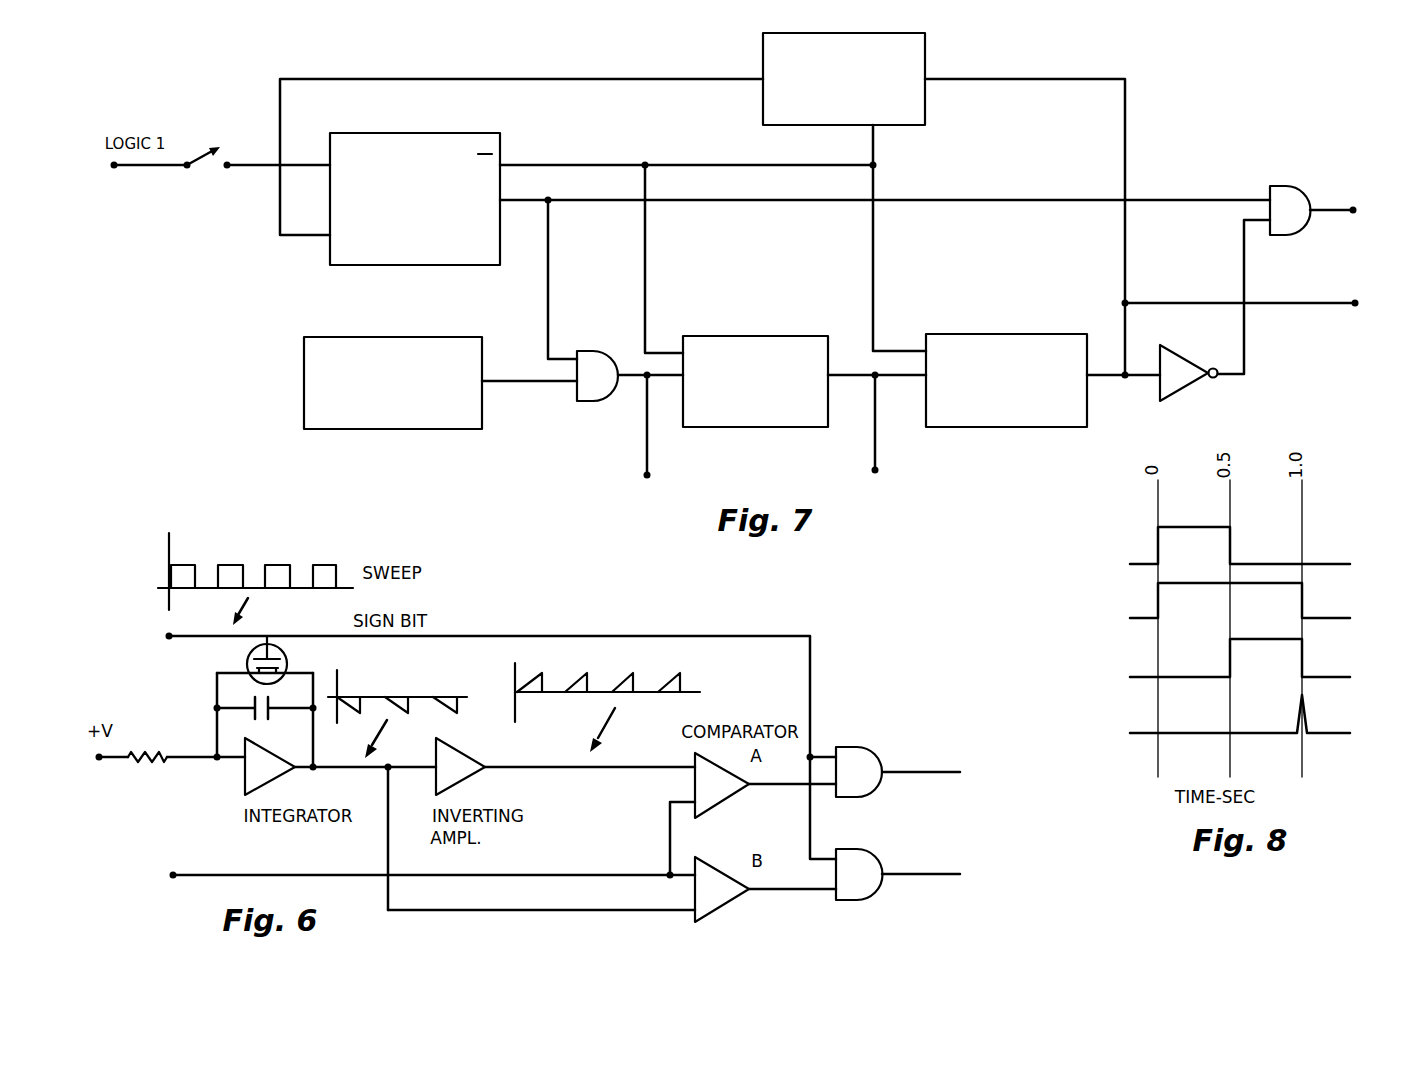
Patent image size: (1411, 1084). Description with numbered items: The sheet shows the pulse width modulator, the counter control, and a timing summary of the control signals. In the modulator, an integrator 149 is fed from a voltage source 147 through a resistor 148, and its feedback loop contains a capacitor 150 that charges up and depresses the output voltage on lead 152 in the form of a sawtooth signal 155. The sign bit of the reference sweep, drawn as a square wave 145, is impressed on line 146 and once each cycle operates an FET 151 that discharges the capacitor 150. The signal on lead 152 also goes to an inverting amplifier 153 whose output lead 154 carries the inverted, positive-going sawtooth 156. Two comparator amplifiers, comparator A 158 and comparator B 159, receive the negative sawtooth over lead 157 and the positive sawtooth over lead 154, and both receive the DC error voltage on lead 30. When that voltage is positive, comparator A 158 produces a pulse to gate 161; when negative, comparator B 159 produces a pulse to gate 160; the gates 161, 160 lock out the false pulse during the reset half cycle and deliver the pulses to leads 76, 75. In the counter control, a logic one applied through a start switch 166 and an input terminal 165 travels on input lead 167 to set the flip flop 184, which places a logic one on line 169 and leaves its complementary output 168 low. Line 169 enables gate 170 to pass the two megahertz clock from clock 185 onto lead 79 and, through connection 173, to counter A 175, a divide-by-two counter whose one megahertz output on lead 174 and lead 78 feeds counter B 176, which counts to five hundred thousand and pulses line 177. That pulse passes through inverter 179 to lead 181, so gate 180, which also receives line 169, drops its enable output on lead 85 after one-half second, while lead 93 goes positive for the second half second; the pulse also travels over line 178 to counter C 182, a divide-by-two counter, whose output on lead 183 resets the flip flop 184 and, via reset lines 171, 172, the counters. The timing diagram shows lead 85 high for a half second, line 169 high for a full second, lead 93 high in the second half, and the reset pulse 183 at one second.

In FIG. 7, the logic 1 input terminal 165 is at (142, 166).
In FIG. 7, the start switch 166 is at (204, 158).
In FIG. 7, the input lead 167 is at (308, 164).
In FIG. 7, the input flip flop 184 is at (440, 133).
In FIG. 7, the reset lead 183 is at (686, 79).
In FIG. 8, the reset lead 183 is at (1336, 732).
In FIG. 7, the counter C 182 is at (927, 56).
In FIG. 7, the counter C output line 178 is at (1122, 246).
In FIG. 7, the Q-bar output line 168 is at (545, 164).
In FIG. 7, the enable line 169 is at (590, 201).
In FIG. 8, the enable line 169 is at (1336, 617).
In FIG. 7, the reset line to counter A 171 is at (648, 276).
In FIG. 7, the reset line to counter B 172 is at (876, 276).
In FIG. 7, the 2 MHZ clock 185 is at (410, 337).
In FIG. 7, the gate 170 is at (600, 351).
In FIG. 7, the gated clock line 173 is at (667, 378).
In FIG. 7, the lead 79 is at (645, 437).
In FIG. 7, the counter A 175 is at (768, 336).
In FIG. 7, the output lead 174 is at (850, 371).
In FIG. 7, the lead 78 is at (876, 453).
In FIG. 7, the counter B 176 is at (1013, 334).
In FIG. 7, the output line 177 is at (1108, 377).
In FIG. 7, the inverter 179 is at (1183, 390).
In FIG. 7, the lead 181 is at (1246, 342).
In FIG. 7, the gate 180 is at (1288, 186).
In FIG. 7, the enable lead 85 is at (1333, 211).
In FIG. 8, the enable lead 85 is at (1338, 562).
In FIG. 7, the lead 93 is at (1322, 306).
In FIG. 8, the lead 93 is at (1336, 675).
In FIG. 6, the reference sweep square wave 145 is at (225, 565).
In FIG. 6, the sign bit line 146 is at (206, 638).
In FIG. 6, the FET 151 is at (287, 658).
In FIG. 6, the capacitor 150 is at (279, 709).
In FIG. 6, the voltage source 147 is at (100, 760).
In FIG. 6, the resistor 148 is at (148, 760).
In FIG. 6, the integrator 149 is at (242, 771).
In FIG. 6, the output lead 152 is at (338, 769).
In FIG. 6, the sawtooth signal 155 is at (366, 697).
In FIG. 6, the inverting amplifier 153 is at (455, 746).
In FIG. 6, the output lead 154 is at (553, 767).
In FIG. 6, the inverted sawtooth signal 156 is at (620, 690).
In FIG. 6, the comparator amplifier A 158 is at (722, 800).
In FIG. 6, the lead 30 is at (330, 876).
In FIG. 6, the lead 157 is at (520, 910).
In FIG. 6, the comparator amplifier B 159 is at (736, 906).
In FIG. 6, the gate 161 is at (848, 747).
In FIG. 6, the lead 76 is at (910, 770).
In FIG. 6, the gate 160 is at (870, 898).
In FIG. 6, the lead 75 is at (910, 873).